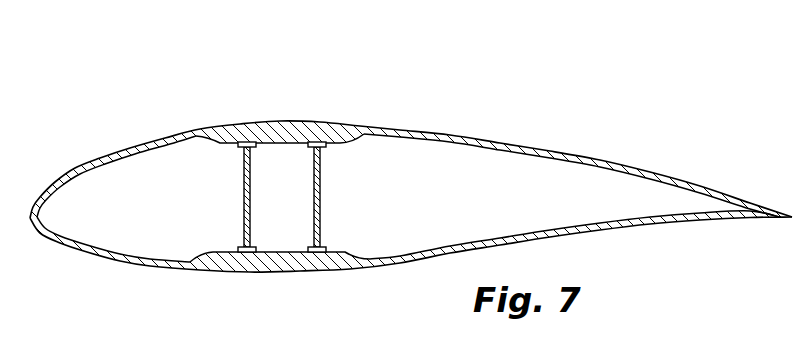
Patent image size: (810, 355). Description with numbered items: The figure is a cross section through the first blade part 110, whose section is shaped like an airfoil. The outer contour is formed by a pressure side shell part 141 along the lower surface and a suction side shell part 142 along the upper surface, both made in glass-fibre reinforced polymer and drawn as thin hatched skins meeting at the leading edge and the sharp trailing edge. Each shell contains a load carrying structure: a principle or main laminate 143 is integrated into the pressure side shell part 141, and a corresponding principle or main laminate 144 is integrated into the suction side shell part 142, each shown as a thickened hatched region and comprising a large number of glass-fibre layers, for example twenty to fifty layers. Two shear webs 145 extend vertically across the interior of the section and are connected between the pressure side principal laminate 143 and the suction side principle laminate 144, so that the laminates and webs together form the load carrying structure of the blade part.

The first blade part 110 is at (411, 179).
The pressure side shell part 141 is at (660, 227).
The suction side shell part 142 is at (597, 162).
The principle or main laminate of the pressure side 143 is at (238, 267).
The principle or main laminate of the suction side 144 is at (282, 125).
The shear webs 145 is at (250, 228).